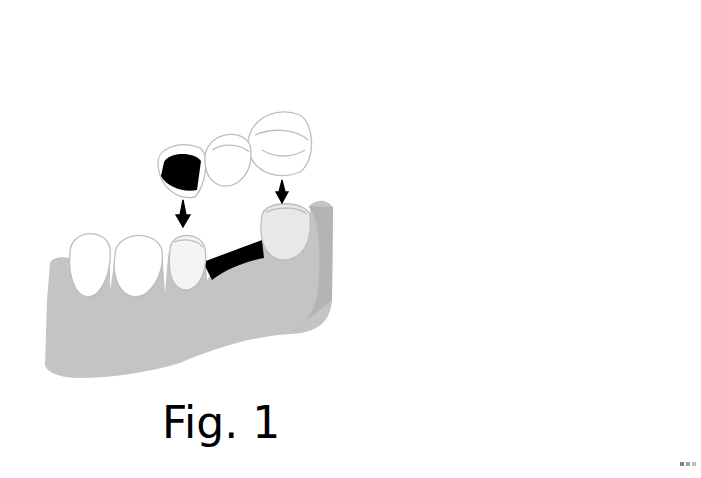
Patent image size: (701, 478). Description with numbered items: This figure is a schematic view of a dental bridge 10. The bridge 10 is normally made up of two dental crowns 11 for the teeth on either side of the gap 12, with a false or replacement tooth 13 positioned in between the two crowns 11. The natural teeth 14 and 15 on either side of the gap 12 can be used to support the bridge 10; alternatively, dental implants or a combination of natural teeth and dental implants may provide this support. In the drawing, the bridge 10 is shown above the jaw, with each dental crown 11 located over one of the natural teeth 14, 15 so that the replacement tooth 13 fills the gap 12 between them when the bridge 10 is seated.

The dental bridge 10 is at (235, 126).
The dental crown 11 is at (167, 150).
The gap 12 is at (240, 260).
The replacement tooth 13 is at (212, 138).
The natural tooth 14 is at (177, 247).
The natural tooth 15 is at (300, 237).